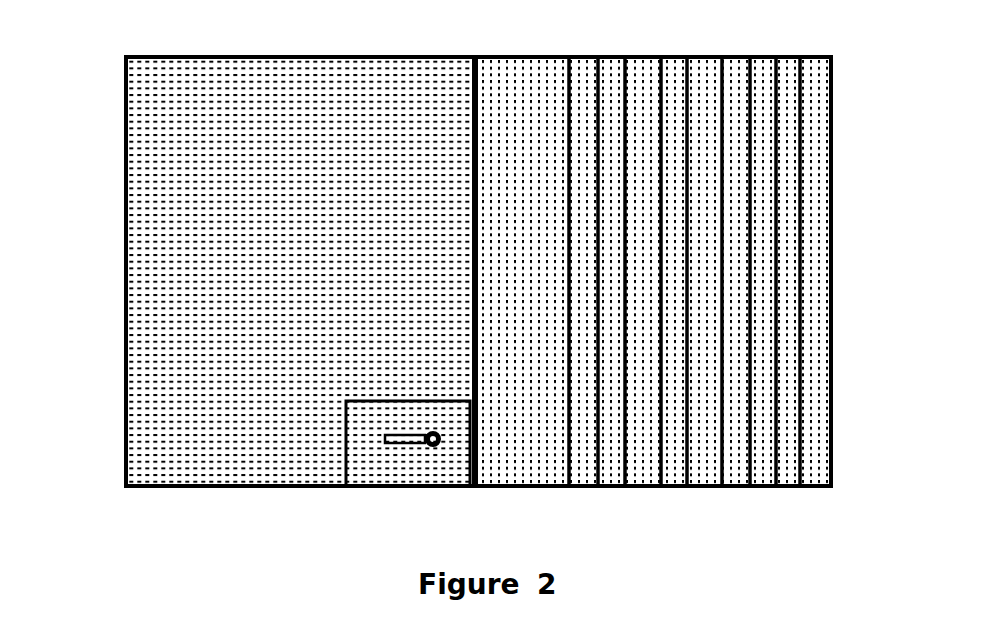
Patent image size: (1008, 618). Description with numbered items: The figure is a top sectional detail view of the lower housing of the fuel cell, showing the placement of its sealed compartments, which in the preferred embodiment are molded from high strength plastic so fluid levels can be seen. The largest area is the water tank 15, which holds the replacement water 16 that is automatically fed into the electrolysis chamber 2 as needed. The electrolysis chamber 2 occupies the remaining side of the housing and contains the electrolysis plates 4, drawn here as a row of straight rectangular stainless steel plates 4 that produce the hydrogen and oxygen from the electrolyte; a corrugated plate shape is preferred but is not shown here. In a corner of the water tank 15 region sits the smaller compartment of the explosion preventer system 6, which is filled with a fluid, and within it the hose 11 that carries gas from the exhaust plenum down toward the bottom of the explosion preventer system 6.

The electrolysis chamber 2 is at (833, 330).
The stainless steel plates 4 is at (573, 488).
The explosion preventer system 6 is at (389, 469).
The hose 11 is at (410, 445).
The water tank 15 is at (118, 413).
The replacement water 16 is at (148, 255).